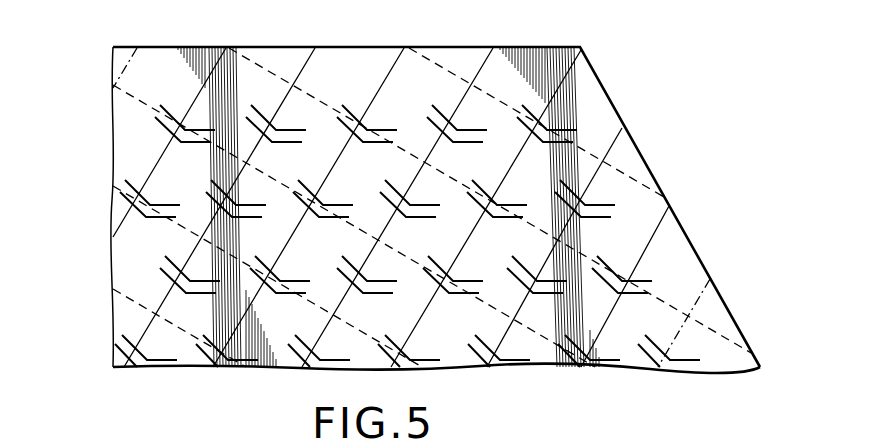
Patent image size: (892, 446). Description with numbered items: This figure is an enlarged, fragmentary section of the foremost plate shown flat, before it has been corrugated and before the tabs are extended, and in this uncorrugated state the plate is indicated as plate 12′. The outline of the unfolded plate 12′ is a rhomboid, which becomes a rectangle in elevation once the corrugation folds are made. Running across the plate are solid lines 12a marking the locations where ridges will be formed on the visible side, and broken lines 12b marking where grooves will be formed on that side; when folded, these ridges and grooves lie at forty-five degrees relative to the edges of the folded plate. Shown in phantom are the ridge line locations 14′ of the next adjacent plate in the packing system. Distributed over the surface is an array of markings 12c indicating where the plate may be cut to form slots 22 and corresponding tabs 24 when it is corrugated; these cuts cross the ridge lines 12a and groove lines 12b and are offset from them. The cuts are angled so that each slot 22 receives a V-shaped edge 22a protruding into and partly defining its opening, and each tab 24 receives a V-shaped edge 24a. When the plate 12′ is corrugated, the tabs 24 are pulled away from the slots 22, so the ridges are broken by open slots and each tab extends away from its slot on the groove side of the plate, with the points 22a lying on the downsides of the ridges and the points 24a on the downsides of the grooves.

The uncorrugated plate 12′ is at (356, 70).
The ridge line 12a is at (561, 82).
The groove line 12b is at (612, 142).
The cut marking 12c is at (446, 115).
The ridge line location of next adjacent plate 14′ is at (281, 76).
The slot 22 is at (149, 206).
The V-shaped slot edge 22a is at (142, 200).
The tab 24 is at (188, 279).
The V-shaped tab edge 24a is at (188, 294).